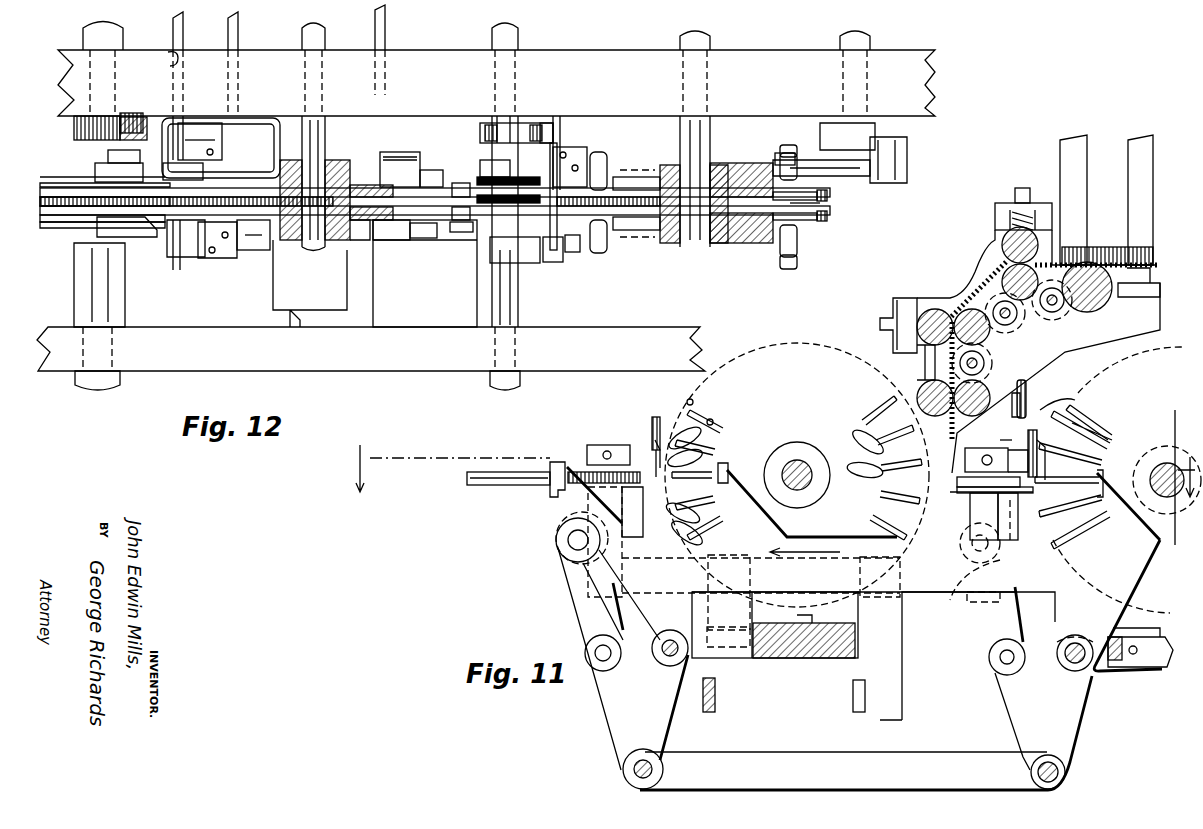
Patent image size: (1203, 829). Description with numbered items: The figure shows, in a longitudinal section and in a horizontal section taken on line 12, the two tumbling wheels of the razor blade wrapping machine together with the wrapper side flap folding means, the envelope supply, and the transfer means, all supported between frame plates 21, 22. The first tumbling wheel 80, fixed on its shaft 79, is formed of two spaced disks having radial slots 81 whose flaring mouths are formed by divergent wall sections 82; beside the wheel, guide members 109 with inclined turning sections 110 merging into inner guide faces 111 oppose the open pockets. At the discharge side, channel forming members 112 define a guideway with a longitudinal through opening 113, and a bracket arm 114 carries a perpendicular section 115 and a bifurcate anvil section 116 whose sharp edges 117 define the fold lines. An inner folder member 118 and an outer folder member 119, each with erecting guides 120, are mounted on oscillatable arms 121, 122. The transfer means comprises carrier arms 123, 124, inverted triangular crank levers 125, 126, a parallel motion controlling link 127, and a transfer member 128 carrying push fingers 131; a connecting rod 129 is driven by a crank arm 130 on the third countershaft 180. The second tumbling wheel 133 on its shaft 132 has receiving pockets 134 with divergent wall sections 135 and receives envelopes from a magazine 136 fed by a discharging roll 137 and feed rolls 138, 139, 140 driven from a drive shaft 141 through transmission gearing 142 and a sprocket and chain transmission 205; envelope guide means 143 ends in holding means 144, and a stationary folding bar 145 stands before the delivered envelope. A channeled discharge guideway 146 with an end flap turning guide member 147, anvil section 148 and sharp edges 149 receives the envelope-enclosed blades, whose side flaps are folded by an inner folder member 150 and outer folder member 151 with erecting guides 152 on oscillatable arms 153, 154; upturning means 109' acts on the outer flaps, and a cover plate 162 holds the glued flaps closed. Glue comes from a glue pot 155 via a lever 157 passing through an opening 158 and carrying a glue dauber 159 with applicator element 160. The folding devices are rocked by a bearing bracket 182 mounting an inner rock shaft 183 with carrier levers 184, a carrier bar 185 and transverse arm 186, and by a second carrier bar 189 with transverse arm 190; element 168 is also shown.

In FIG. 11, the section line 12 is at (779, 477).
In FIG. 12, the frame plate 21 is at (628, 327).
In FIG. 12, the frame plate 22 is at (604, 52).
In FIG. 12, the shaft 79 is at (690, 247).
In FIG. 11, the shaft 79 is at (1160, 462).
In FIG. 12, the tumbling wheel 80 is at (740, 230).
In FIG. 11, the tumbling wheel 80 is at (1095, 380).
In FIG. 12, the radial slots 81 is at (808, 204).
In FIG. 11, the radial slots 81 is at (1085, 412).
In FIG. 12, the divergent wall sections 82 is at (826, 222).
In FIG. 11, the divergent wall sections 82 is at (1065, 423).
In FIG. 12, the wrapper side flap turning guide members 109 is at (693, 201).
In FIG. 12, the means for upturning outer side flaps 109' is at (230, 249).
In FIG. 12, the wrapper side flap turning sections 110 is at (797, 228).
In FIG. 12, the inner guide faces 111 is at (625, 256).
In FIG. 12, the channel forming members 112 is at (572, 248).
In FIG. 11, the channel forming members 112 is at (970, 510).
In FIG. 12, the longitudinal through opening 113 is at (478, 177).
In FIG. 11, the bracket arm 114 is at (1015, 453).
In FIG. 11, the perpendicular section 115 is at (1057, 402).
In FIG. 12, the anvil section 116 is at (560, 240).
In FIG. 11, the anvil section 116 is at (1004, 431).
In FIG. 12, the sharp edges 117 is at (475, 298).
In FIG. 12, the inner folder member 118 is at (488, 123).
In FIG. 11, the inner folder member 118 is at (1012, 400).
In FIG. 12, the outer folder member 119 is at (470, 232).
In FIG. 12, the wrapper side flap erecting guides 120 is at (552, 262).
In FIG. 11, the wrapper side flap erecting guides 120 is at (1028, 455).
In FIG. 12, the oscillatable arm 121 is at (504, 120).
In FIG. 11, the oscillatable arm 121 is at (1000, 515).
In FIG. 12, the oscillatable arm 122 is at (492, 275).
In FIG. 12, the carrier arms 123 is at (150, 265).
In FIG. 11, the carrier arms 123 is at (568, 603).
In FIG. 12, the carrier arms 124 is at (570, 300).
In FIG. 11, the carrier arms 124 is at (980, 628).
In FIG. 12, the crank levers 125 is at (190, 270).
In FIG. 11, the crank levers 125 is at (615, 710).
In FIG. 12, the crank levers 126 is at (558, 230).
In FIG. 11, the crank levers 126 is at (1000, 706).
In FIG. 11, the parallel motion controlling link 127 is at (830, 752).
In FIG. 12, the transfer member 128 is at (408, 240).
In FIG. 11, the transfer member 128 is at (918, 600).
In FIG. 12, the connecting rod 129 is at (805, 155).
In FIG. 11, the connecting rod 129 is at (1145, 667).
In FIG. 12, the crank arm 130 is at (907, 143).
In FIG. 12, the push fingers 131 is at (65, 216).
In FIG. 11, the push fingers 131 is at (738, 470).
In FIG. 12, the shaft 132 is at (321, 175).
In FIG. 11, the shaft 132 is at (805, 458).
In FIG. 12, the second tumbling wheel 133 is at (356, 241).
In FIG. 11, the second tumbling wheel 133 is at (800, 352).
In FIG. 12, the receiving pockets 134 is at (430, 238).
In FIG. 11, the receiving pockets 134 is at (880, 470).
In FIG. 12, the divergent wall sections 135 is at (436, 170).
In FIG. 11, the divergent wall sections 135 is at (695, 405).
In FIG. 11, the magazine 136 is at (1128, 190).
In FIG. 11, the discharging roll 137 is at (1112, 298).
In FIG. 11, the feed rolls 138 is at (1003, 252).
In FIG. 11, the feed rolls 139 is at (968, 310).
In FIG. 11, the feed rolls 140 is at (920, 360).
In FIG. 11, the drive shaft 141 is at (992, 360).
In FIG. 11, the transmission gearing 142 is at (1055, 318).
In FIG. 11, the envelope guide means 143 is at (960, 275).
In FIG. 12, the envelope holding means 144 is at (55, 177).
In FIG. 11, the envelope holding means 144 is at (972, 448).
In FIG. 12, the envelope end flap folding bar 145 is at (460, 227).
In FIG. 11, the envelope end flap folding bar 145 is at (958, 492).
In FIG. 12, the channeled discharge guideway 146 is at (50, 186).
In FIG. 11, the channeled discharge guideway 146 is at (497, 485).
In FIG. 12, the end flap turning guide member 147 is at (198, 230).
In FIG. 11, the end flap turning guide member 147 is at (655, 420).
In FIG. 12, the anvil section 148 is at (70, 183).
In FIG. 11, the anvil section 148 is at (590, 470).
In FIG. 12, the sharp edges 149 is at (45, 170).
In FIG. 12, the inner folder member 150 is at (119, 172).
In FIG. 11, the inner folder member 150 is at (600, 445).
In FIG. 12, the outer folder member 151 is at (127, 227).
In FIG. 12, the oblique erecting guides 152 is at (162, 258).
In FIG. 11, the oblique erecting guides 152 is at (645, 448).
In FIG. 12, the oscillatable arm 153 is at (140, 113).
In FIG. 11, the oscillatable arm 153 is at (585, 505).
In FIG. 12, the oscillatable arm 154 is at (80, 270).
In FIG. 12, the glue pot 155 is at (262, 118).
In FIG. 12, the lever 157 is at (176, 36).
In FIG. 12, the opening 158 is at (168, 55).
In FIG. 12, the glue dauber 159 is at (222, 145).
In FIG. 12, the glue applicator element 160 is at (215, 168).
In FIG. 11, the cover plate 162 is at (495, 472).
In FIG. 12, the rod 168 is at (80, 222).
In FIG. 12, the third countershaft 180 is at (870, 42).
In FIG. 12, the bearing bracket 182 is at (280, 287).
In FIG. 11, the bearing bracket 182 is at (793, 658).
In FIG. 11, the inner rock shaft 183 is at (732, 658).
In FIG. 11, the carrier levers 184 is at (900, 620).
In FIG. 12, the carrier bar 185 is at (400, 152).
In FIG. 11, the carrier bar 185 is at (815, 560).
In FIG. 12, the transverse arm 186 is at (384, 26).
In FIG. 11, the transverse arm 186 is at (853, 697).
In FIG. 12, the carrier bar 189 is at (445, 243).
In FIG. 12, the transverse arm 190 is at (232, 36).
In FIG. 11, the transverse arm 190 is at (715, 706).
In FIG. 11, the sprocket and chain transmission 205 is at (1026, 395).